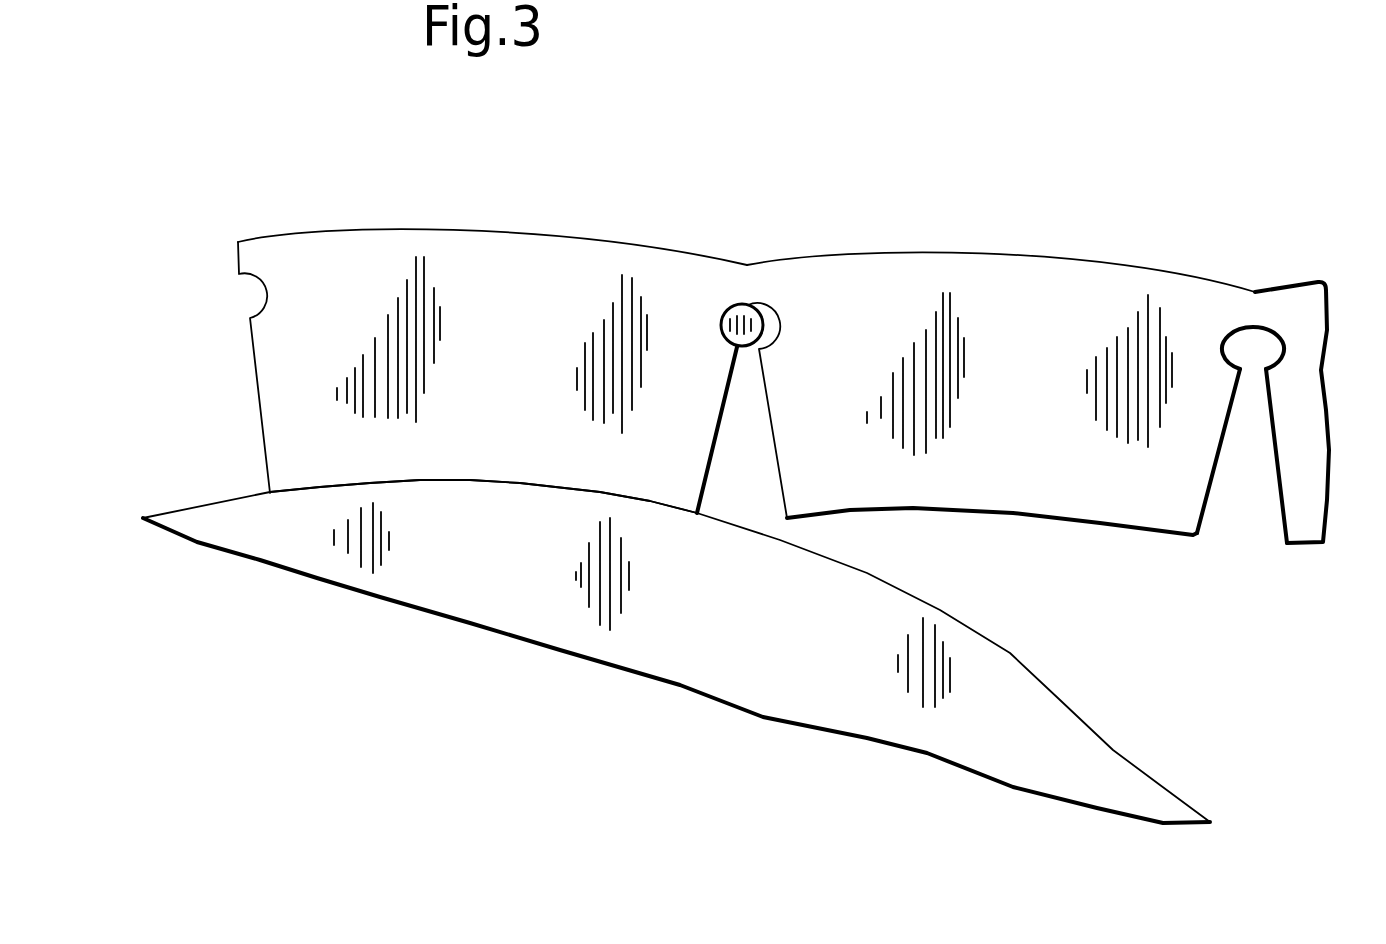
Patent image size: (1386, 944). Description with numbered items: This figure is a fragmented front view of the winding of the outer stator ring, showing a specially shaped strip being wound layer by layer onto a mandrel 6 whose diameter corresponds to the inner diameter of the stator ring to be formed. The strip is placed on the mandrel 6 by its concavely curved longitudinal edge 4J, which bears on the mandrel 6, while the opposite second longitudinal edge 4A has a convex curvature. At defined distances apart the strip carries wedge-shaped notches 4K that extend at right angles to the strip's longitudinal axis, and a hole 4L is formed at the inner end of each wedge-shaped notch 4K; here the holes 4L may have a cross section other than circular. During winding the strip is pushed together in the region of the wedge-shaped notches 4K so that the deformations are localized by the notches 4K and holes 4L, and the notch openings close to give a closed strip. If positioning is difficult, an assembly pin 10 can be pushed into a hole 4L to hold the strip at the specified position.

The second longitudinal edge 4A is at (783, 381).
The assembly pin 10 is at (742, 318).
The longitudinal edge 4J is at (1028, 515).
The wedge-shaped notch 4K is at (1240, 517).
The hole 4L is at (1253, 347).
The mandrel 6 is at (985, 652).